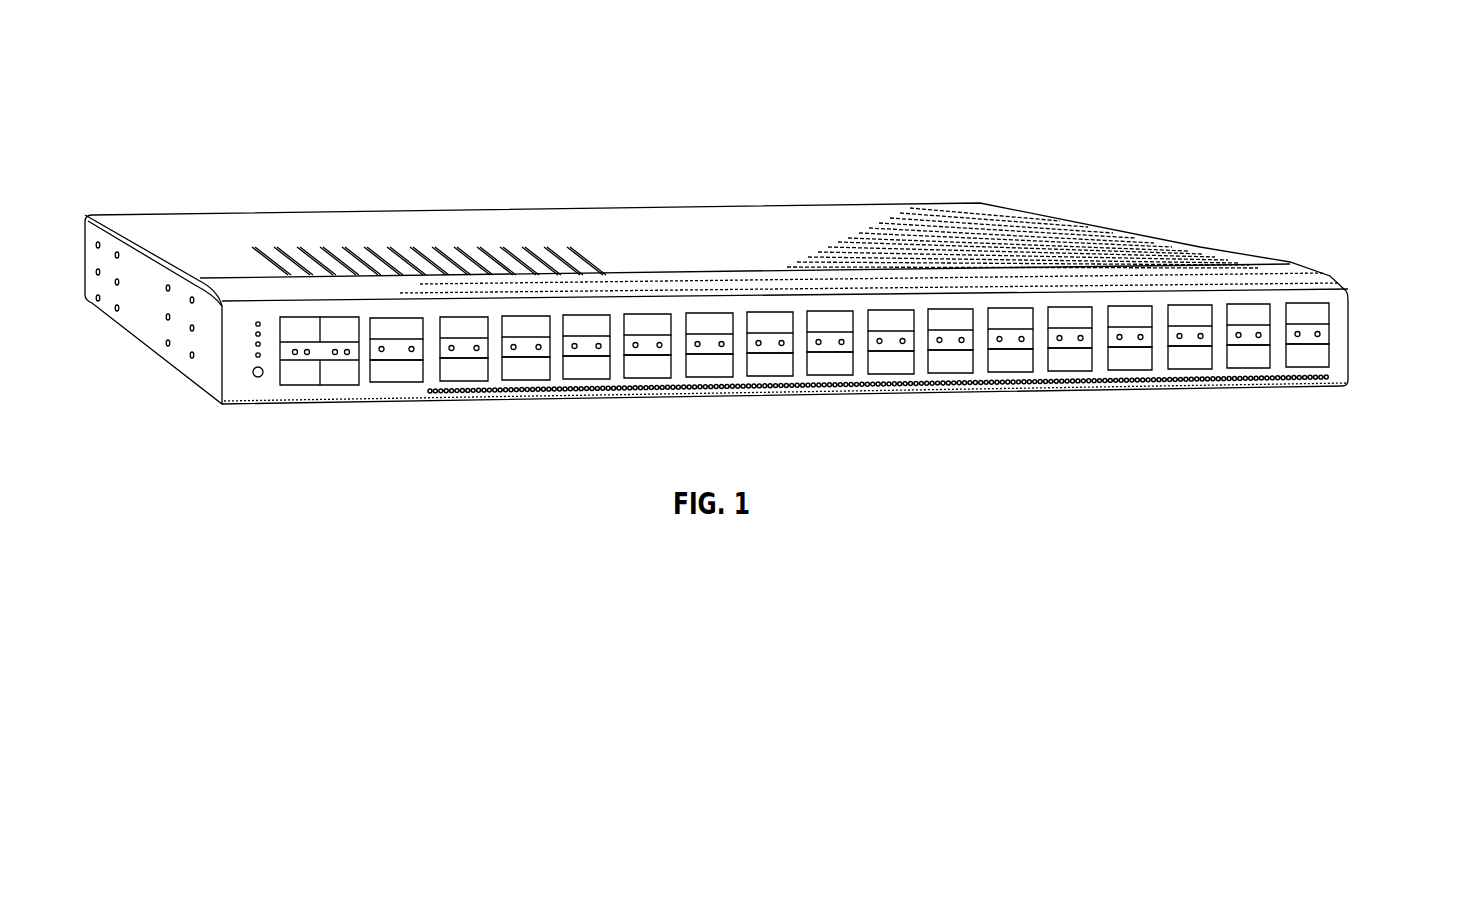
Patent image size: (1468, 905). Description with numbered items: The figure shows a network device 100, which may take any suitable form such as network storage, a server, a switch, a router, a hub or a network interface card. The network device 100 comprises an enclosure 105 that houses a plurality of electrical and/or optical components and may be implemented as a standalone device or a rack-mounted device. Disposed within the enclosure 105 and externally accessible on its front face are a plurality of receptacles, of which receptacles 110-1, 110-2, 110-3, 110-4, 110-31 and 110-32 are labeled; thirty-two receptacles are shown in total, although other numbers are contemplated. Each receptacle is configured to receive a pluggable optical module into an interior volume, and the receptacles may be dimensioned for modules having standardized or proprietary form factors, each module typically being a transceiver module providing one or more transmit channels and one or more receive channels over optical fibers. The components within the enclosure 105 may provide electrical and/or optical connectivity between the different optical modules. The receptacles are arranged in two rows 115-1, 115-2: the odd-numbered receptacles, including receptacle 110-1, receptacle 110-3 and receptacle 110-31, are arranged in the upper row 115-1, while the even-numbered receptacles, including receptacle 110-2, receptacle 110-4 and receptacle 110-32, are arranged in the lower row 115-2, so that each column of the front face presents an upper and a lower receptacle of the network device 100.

The network device 100 is at (1243, 53).
The enclosure 105 is at (695, 218).
The receptacle 110-1 is at (392, 333).
The receptacle 110-2 is at (395, 371).
The receptacle 110-3 is at (458, 330).
The receptacle 110-4 is at (462, 372).
The receptacle 110-31 is at (1295, 317).
The receptacle 110-32 is at (1307, 356).
The row 115-1 is at (885, 277).
The row 115-2 is at (896, 395).